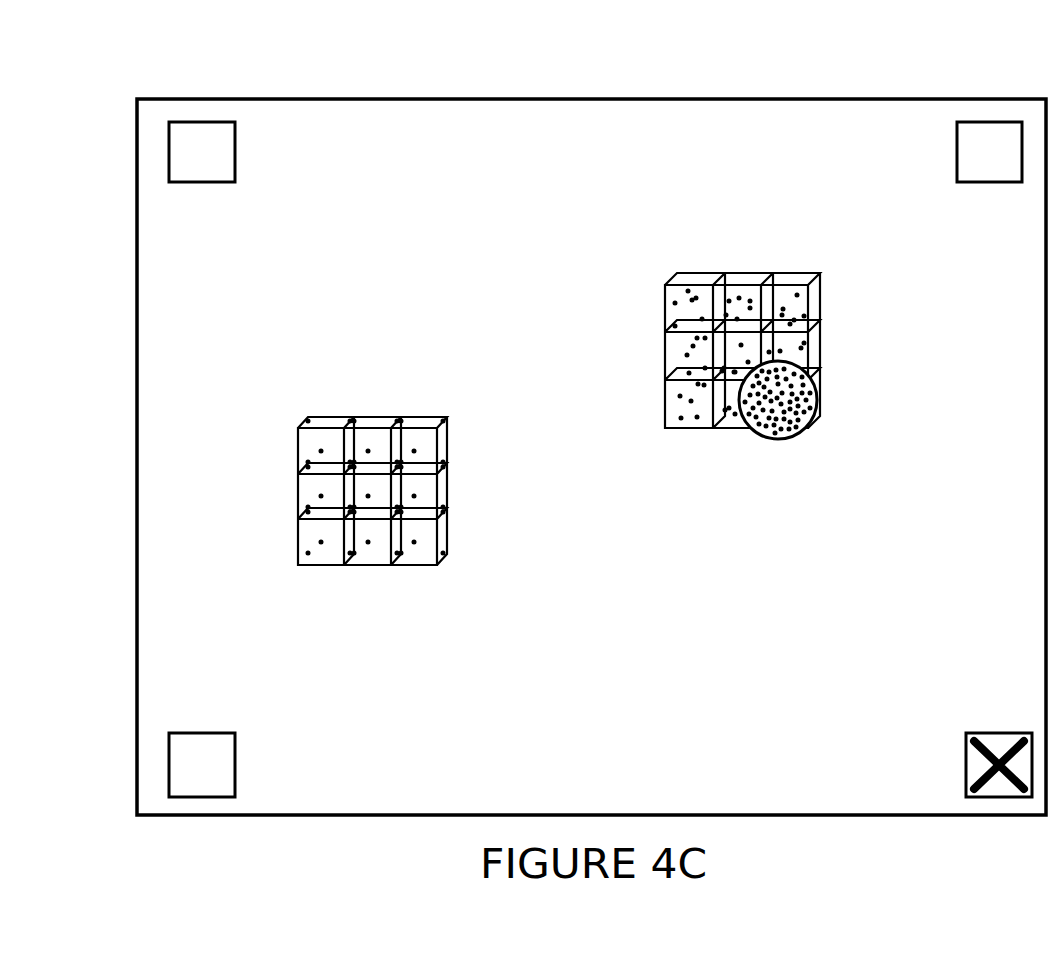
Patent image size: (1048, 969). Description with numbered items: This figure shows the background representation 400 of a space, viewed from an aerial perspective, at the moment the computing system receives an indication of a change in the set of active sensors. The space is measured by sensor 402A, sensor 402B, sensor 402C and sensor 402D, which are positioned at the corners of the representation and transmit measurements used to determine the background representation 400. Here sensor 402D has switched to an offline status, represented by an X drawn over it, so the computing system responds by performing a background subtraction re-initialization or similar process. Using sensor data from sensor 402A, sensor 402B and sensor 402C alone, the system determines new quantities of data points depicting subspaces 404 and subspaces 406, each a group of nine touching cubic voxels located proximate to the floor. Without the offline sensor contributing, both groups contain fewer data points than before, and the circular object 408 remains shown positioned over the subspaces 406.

The background representation 400 is at (158, 69).
The sensor 402A is at (215, 185).
The sensor 402B is at (998, 185).
The sensor 402C is at (200, 733).
The sensor 402D is at (988, 733).
The subspaces 404 is at (316, 410).
The subspaces 406 is at (678, 430).
The object 408 is at (805, 433).